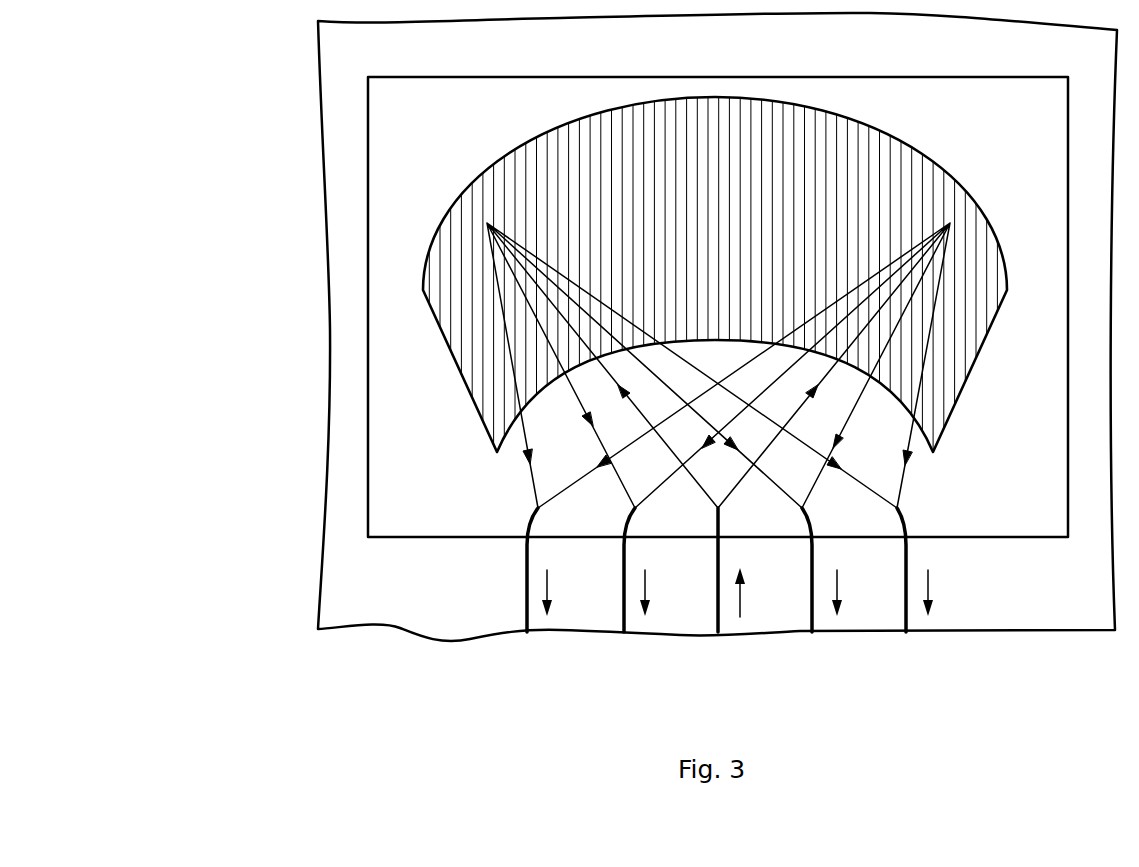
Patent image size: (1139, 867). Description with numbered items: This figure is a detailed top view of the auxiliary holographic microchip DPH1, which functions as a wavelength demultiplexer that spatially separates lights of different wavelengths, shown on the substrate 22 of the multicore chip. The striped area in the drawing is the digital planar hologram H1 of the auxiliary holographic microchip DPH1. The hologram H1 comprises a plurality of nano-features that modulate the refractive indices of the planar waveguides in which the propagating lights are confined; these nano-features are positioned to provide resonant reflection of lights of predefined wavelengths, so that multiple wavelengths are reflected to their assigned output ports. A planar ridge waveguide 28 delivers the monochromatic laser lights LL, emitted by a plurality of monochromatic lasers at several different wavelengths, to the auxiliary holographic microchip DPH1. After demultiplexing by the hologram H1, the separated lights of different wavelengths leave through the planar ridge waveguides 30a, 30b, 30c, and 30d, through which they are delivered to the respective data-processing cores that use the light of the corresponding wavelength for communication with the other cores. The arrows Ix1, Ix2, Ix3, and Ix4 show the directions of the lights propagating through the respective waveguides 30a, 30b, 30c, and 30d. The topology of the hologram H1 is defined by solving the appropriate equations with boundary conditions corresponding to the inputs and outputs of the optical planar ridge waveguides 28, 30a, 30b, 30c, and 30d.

The substrate 22 is at (350, 360).
The auxiliary holographic microchip DPH1 is at (368, 97).
The digital planar hologram H1 is at (493, 201).
The planar ridge waveguide 28 is at (718, 604).
The planar ridge waveguide 30a is at (527, 596).
The planar ridge waveguide 30b is at (624, 605).
The planar ridge waveguide 30c is at (812, 607).
The planar ridge waveguide 30d is at (906, 605).
The monochromatic laser lights LL is at (740, 610).
The arrow Ix1 is at (557, 590).
The arrow Ix2 is at (663, 590).
The arrow Ix3 is at (840, 590).
The arrow Ix4 is at (930, 585).